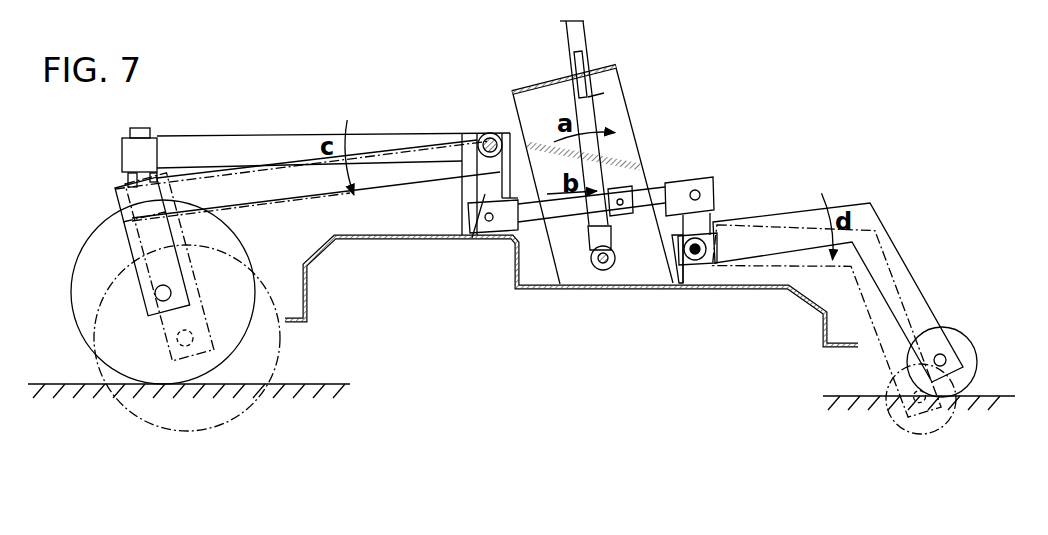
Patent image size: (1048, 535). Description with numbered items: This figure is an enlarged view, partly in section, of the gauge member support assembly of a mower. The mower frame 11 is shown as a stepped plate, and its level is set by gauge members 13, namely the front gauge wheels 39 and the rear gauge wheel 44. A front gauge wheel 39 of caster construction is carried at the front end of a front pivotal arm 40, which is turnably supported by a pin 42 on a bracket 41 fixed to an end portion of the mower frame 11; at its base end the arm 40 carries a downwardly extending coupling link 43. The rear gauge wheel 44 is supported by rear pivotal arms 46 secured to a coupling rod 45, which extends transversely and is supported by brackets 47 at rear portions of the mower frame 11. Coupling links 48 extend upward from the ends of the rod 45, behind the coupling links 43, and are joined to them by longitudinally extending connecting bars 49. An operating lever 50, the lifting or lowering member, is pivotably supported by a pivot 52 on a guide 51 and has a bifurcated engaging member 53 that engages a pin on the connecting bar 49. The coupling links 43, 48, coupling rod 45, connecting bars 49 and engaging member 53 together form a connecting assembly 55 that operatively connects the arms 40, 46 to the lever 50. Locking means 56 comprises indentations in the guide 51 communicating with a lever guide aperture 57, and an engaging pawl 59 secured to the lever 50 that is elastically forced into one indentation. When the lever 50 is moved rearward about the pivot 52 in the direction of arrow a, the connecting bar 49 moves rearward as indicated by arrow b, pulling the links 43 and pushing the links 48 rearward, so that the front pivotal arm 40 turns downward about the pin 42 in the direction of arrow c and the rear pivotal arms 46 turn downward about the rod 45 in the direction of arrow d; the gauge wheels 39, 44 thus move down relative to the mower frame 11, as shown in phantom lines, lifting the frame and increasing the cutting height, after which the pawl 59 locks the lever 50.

The mower frame 11 is at (376, 243).
The gauge members 13 is at (82, 345).
The front gauge wheels 39 is at (78, 252).
The front pivotal arm 40 is at (243, 140).
The bracket 41 is at (462, 188).
The pin 42 is at (490, 138).
The coupling link 43 is at (475, 242).
The rear gauge wheel 44 is at (966, 350).
The coupling rod 45 is at (700, 263).
The rear pivotal arms 46 is at (914, 292).
The brackets 47 is at (683, 285).
The coupling links 48 is at (705, 223).
The connecting bars 49 is at (640, 190).
The operating lever 50 is at (579, 33).
The guide 51 is at (618, 118).
The pivot 52 is at (601, 270).
The bifurcated engaging member 53 is at (632, 216).
The connecting assembly 55 is at (683, 177).
The locking means 56 is at (592, 62).
The lever guide aperture 57 is at (538, 85).
The engaging pawl 59 is at (610, 90).